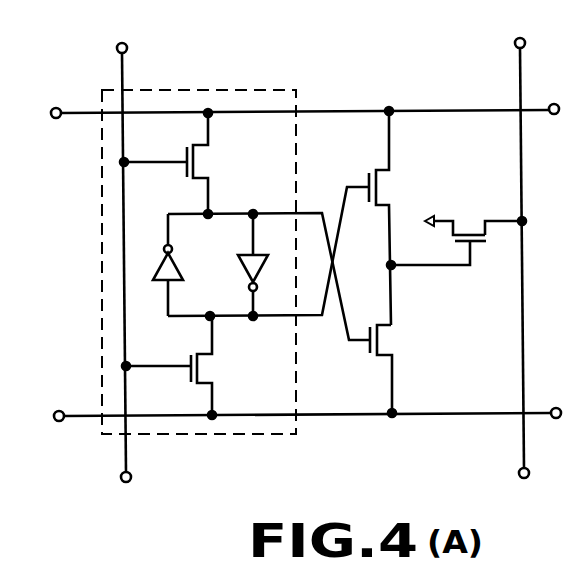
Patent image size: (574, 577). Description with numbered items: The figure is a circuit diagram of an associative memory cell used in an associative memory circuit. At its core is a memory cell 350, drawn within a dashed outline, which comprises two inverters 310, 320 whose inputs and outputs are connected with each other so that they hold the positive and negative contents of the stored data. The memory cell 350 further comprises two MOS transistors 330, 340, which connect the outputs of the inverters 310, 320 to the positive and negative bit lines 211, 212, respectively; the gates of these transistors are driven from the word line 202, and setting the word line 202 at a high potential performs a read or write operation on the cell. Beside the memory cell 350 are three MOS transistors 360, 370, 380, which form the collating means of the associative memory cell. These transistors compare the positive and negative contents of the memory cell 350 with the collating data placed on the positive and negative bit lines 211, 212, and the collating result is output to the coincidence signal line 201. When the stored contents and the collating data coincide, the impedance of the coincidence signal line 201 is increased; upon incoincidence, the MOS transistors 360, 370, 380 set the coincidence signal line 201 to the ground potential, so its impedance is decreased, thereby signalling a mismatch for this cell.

The coincidence signal line 201 is at (522, 342).
The word line 202 is at (124, 62).
The positive bit line 211 is at (80, 112).
The negative bit line 212 is at (85, 414).
The inverter 310 is at (180, 272).
The inverter 320 is at (240, 265).
The MOS transistor 330 is at (205, 160).
The MOS transistor 340 is at (205, 364).
The memory cell 350 is at (258, 435).
The MOS transistor 360 is at (385, 188).
The MOS transistor 370 is at (390, 342).
The MOS transistor 380 is at (472, 226).